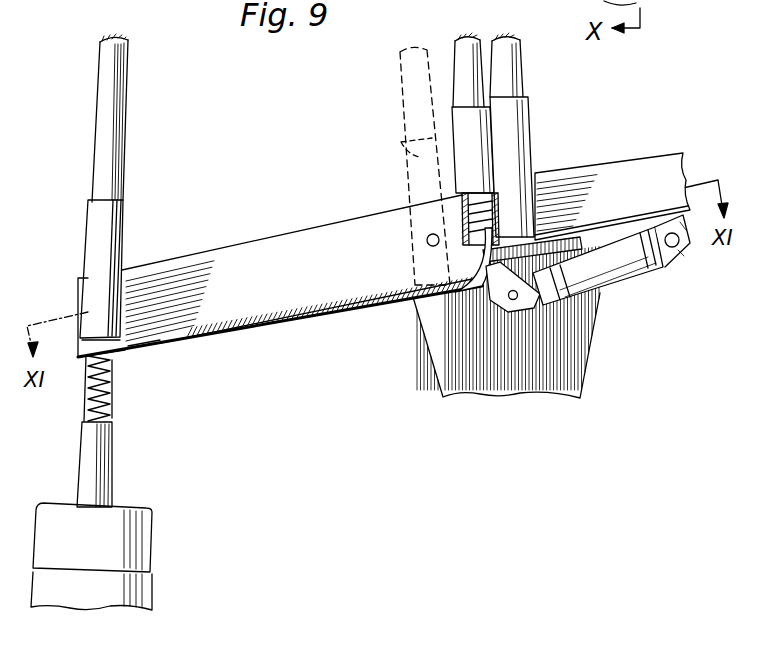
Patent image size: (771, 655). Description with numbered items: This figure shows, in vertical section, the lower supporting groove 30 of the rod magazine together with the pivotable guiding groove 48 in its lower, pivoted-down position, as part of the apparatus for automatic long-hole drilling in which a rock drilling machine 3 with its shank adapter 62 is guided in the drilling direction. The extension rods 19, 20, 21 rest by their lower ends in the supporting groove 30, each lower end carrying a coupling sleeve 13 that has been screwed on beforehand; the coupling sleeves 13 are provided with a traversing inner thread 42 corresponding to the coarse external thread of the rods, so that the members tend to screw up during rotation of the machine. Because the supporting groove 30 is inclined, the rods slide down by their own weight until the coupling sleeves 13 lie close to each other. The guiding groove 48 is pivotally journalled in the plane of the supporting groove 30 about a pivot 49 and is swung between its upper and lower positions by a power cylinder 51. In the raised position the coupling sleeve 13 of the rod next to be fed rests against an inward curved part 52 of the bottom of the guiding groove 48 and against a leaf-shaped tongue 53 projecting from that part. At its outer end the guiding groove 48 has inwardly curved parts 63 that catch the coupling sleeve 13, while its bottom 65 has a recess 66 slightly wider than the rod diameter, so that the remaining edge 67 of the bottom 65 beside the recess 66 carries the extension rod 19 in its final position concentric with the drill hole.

The rock drilling machine 3 is at (125, 540).
The coupling sleeve 13 is at (112, 216).
The extension rod 19 is at (118, 118).
The extension rod 20 is at (459, 55).
The extension rod 21 is at (510, 58).
The supporting groove 30 is at (634, 177).
The inner thread 42 is at (498, 206).
The guiding groove 48 is at (260, 250).
The pivot 49 is at (427, 238).
The power cylinder 51 is at (600, 267).
The inward curved part 52 is at (498, 320).
The leaf-shaped tongue 53 is at (462, 210).
The shank adapter 62 is at (108, 388).
The inwardly curved parts 63 is at (80, 302).
The bottom 65 is at (240, 333).
The recess 66 is at (166, 338).
The edge 67 is at (138, 335).